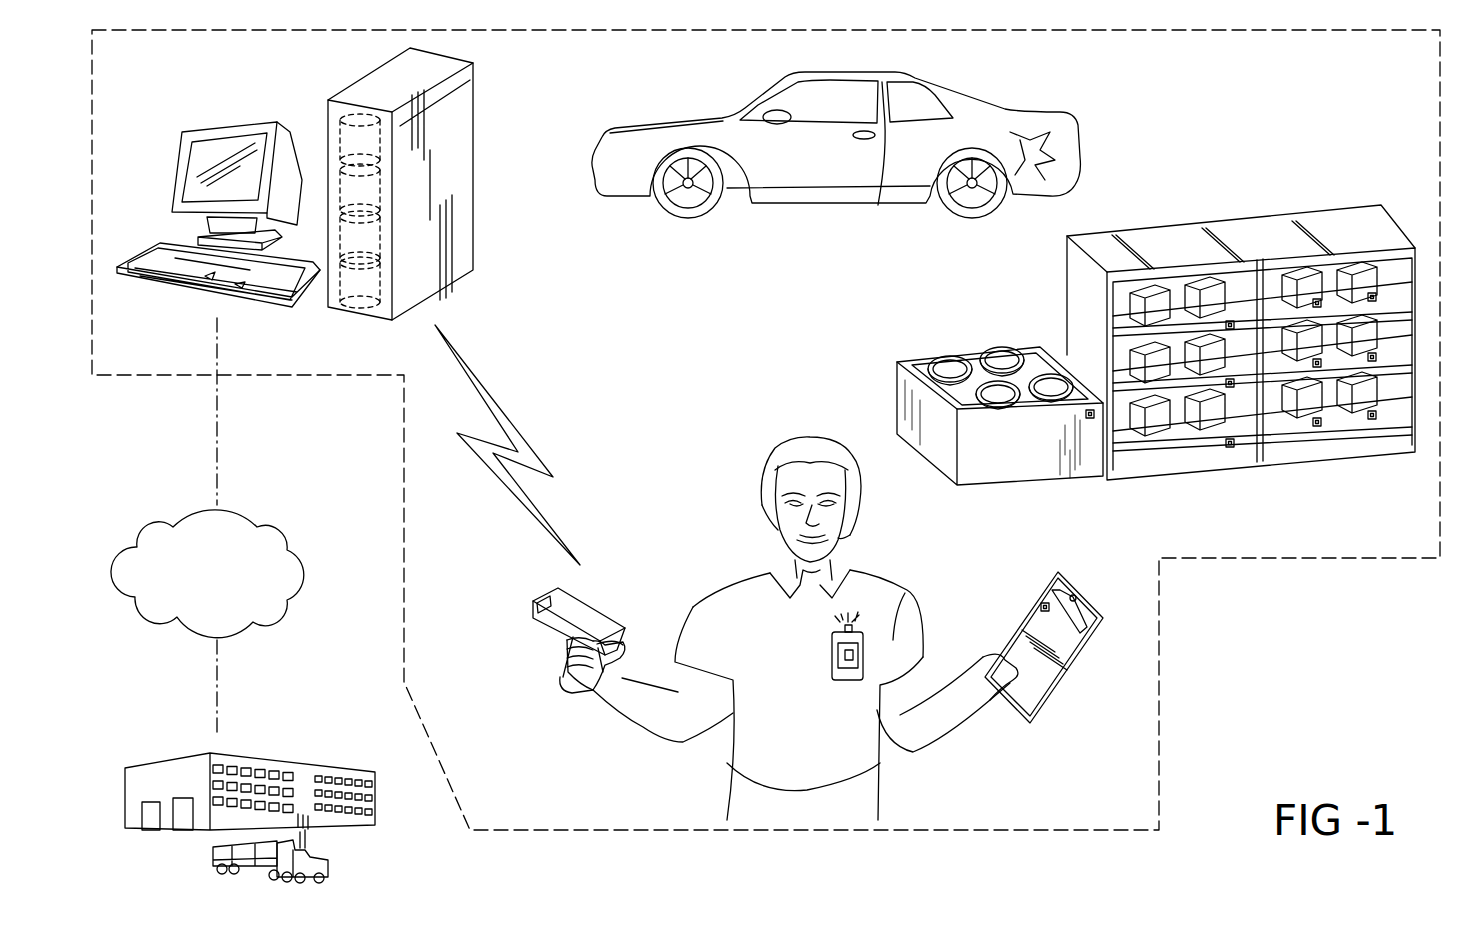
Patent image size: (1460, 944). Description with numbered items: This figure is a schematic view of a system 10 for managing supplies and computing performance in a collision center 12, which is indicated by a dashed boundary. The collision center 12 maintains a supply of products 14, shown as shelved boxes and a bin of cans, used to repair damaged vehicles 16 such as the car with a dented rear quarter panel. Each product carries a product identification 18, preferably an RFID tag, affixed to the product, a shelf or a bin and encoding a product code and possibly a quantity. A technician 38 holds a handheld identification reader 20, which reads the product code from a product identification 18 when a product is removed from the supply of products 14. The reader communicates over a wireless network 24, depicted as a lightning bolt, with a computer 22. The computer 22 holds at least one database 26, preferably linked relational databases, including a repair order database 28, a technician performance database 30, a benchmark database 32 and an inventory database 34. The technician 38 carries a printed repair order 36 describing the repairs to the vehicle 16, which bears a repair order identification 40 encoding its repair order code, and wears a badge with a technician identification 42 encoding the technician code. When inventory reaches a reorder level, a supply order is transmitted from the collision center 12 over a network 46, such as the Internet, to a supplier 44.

The system 10 is at (1254, 611).
The collision center 12 is at (1160, 653).
The supply of products 14 is at (1253, 180).
The vehicle 16 is at (1030, 110).
The product identification 18 is at (1231, 322).
The identification reader 20 is at (530, 614).
The computer 22 is at (357, 80).
The wireless network 24 is at (520, 432).
The database 26 is at (352, 317).
The repair order database 28 is at (387, 143).
The technician performance database 30 is at (387, 195).
The benchmark database 32 is at (387, 243).
The inventory database 34 is at (387, 285).
The repair order 36 is at (1043, 668).
The technician 38 is at (745, 583).
The repair order identification 40 is at (1040, 606).
The technician identification 42 is at (866, 658).
The supplier 44 is at (260, 753).
The network 46 is at (172, 527).